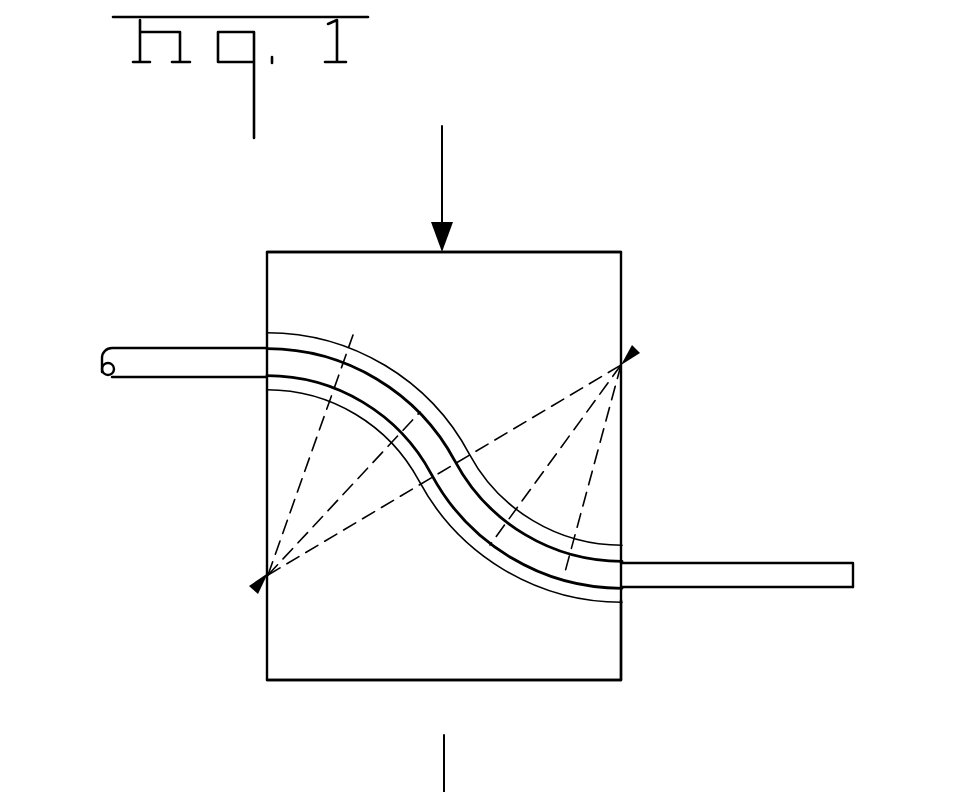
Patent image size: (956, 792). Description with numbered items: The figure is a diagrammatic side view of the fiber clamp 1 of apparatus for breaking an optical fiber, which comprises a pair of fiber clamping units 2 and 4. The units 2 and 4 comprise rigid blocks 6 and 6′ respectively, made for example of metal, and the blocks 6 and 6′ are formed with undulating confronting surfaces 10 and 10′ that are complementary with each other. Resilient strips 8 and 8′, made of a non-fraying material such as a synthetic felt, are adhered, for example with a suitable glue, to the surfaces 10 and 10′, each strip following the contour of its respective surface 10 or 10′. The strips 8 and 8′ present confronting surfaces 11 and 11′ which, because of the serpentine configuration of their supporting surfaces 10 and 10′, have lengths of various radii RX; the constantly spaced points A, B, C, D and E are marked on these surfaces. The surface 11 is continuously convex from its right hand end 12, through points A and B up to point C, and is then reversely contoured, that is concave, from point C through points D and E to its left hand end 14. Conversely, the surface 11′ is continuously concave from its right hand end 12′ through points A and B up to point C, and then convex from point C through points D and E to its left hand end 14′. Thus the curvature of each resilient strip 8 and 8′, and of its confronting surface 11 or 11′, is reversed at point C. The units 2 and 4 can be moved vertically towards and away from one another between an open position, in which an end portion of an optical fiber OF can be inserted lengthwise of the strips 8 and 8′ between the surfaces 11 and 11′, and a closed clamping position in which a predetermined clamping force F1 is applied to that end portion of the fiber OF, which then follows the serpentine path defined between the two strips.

The fiber clamp 1 is at (652, 222).
The fiber clamping unit 2 is at (283, 237).
The fiber clamping unit 4 is at (284, 697).
The rigid block 6 is at (273, 289).
The rigid block 6′ is at (608, 655).
The resilient strip 8 is at (302, 347).
The resilient strip 8′ is at (572, 548).
The undulating confronting surface 10 is at (457, 452).
The undulating confronting surface 10′ is at (490, 556).
The confronting surface 11 is at (402, 425).
The confronting surface 11′ is at (432, 503).
The right hand end of surface 11 12 is at (622, 562).
The right hand end of surface 11' 12′ is at (622, 602).
The left hand end of surface 11 14 is at (272, 340).
The left hand end of surface 11' 14′ is at (268, 385).
The clamping force F1 is at (442, 142).
The radii RX is at (258, 589).
The optical fiber OF is at (788, 578).
The point A is at (569, 558).
The point B is at (500, 528).
The point C is at (444, 470).
The point D is at (405, 427).
The point E is at (339, 378).